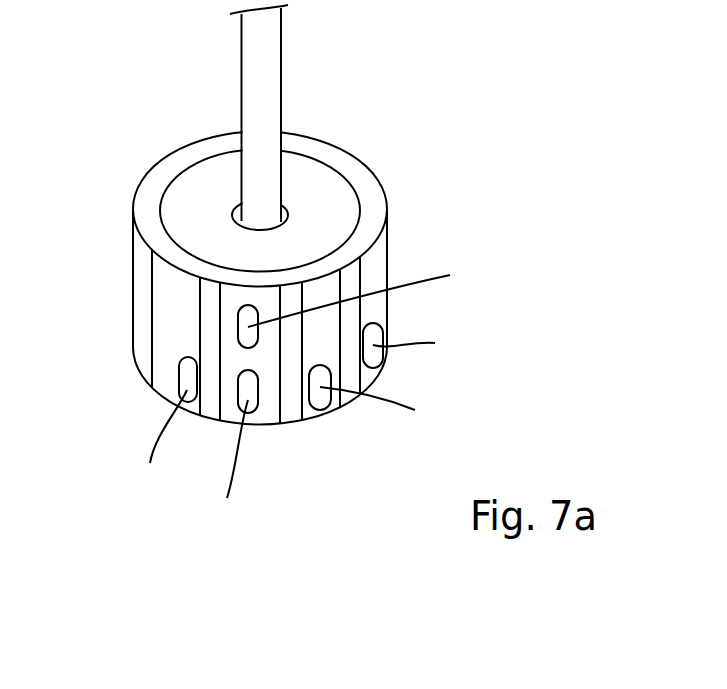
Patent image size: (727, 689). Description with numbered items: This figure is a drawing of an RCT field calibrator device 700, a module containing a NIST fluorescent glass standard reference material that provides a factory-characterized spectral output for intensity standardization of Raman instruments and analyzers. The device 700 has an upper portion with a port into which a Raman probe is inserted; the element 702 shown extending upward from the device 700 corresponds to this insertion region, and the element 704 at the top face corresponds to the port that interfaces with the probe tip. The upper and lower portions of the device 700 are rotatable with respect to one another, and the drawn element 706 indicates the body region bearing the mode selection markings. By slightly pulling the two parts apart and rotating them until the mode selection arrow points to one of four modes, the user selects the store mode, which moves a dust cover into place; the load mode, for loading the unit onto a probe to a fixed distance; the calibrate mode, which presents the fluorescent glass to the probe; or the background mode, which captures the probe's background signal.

The device 700 is at (505, 165).
The shaft 702 is at (272, 48).
The central aperture 704 is at (231, 212).
The knob body with mode slots 706 is at (315, 456).